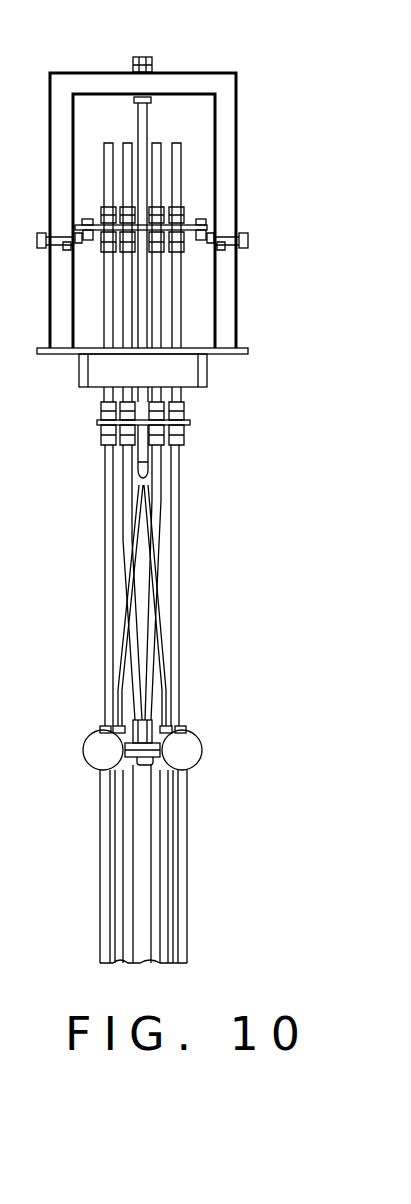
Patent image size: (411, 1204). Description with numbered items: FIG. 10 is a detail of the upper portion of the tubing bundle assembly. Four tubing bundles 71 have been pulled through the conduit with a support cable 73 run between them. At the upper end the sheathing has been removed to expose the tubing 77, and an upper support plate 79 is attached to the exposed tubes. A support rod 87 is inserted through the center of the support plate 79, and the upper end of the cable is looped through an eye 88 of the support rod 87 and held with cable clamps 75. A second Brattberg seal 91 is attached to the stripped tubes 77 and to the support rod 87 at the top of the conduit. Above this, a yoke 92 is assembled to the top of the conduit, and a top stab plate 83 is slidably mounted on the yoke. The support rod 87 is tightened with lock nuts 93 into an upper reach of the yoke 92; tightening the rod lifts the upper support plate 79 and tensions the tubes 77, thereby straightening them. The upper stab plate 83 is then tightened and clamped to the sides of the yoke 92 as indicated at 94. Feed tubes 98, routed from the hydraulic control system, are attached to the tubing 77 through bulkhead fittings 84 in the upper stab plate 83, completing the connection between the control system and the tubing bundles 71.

The tubing bundle 71 is at (103, 812).
The support cable 73 is at (149, 467).
The cable clamp 75 is at (148, 725).
The tubing 77 is at (175, 305).
The support plate 79 is at (190, 422).
The stab plate 83 is at (95, 222).
The fittings 84 is at (182, 206).
The support rod 87 is at (148, 112).
The eye 88 is at (138, 468).
The second Brattberg seal 91 is at (204, 369).
The yoke 92 is at (224, 201).
The lock nuts 93 is at (151, 69).
The clamp 94 is at (238, 233).
The feed tubes 98 is at (104, 157).